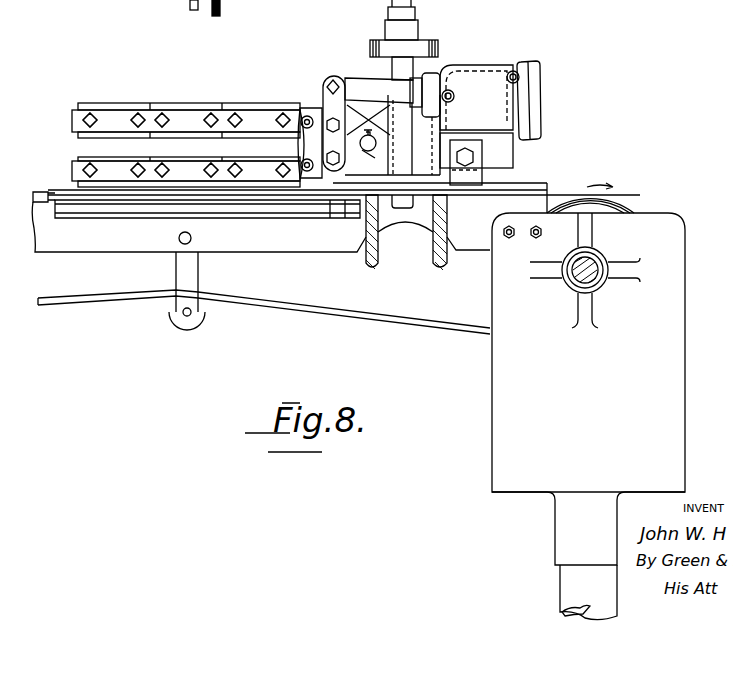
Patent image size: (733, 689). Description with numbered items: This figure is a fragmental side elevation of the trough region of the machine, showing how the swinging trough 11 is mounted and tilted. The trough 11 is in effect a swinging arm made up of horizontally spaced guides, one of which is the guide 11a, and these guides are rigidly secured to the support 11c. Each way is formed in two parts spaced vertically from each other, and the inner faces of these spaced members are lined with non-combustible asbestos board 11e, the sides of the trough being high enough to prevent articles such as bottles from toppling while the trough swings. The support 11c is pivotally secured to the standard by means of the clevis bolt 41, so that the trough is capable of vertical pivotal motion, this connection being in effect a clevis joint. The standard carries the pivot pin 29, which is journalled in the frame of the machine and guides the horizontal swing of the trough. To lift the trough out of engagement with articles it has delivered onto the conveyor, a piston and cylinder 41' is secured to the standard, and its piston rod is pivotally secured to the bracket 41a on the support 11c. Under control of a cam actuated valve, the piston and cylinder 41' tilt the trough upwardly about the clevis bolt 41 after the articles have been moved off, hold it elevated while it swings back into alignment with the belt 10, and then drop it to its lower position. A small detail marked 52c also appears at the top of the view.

The belt 10 is at (556, 190).
The trough 11 is at (480, 138).
The guide 11a is at (74, 120).
The asbestos board 11e is at (147, 99).
The support 11c is at (363, 92).
The pivot pin 29 is at (405, 62).
The clevis bolt 41 is at (345, 209).
The bracket 41a is at (326, 108).
The piston and cylinder 41' is at (430, 75).
The stop member 52c is at (221, 8).